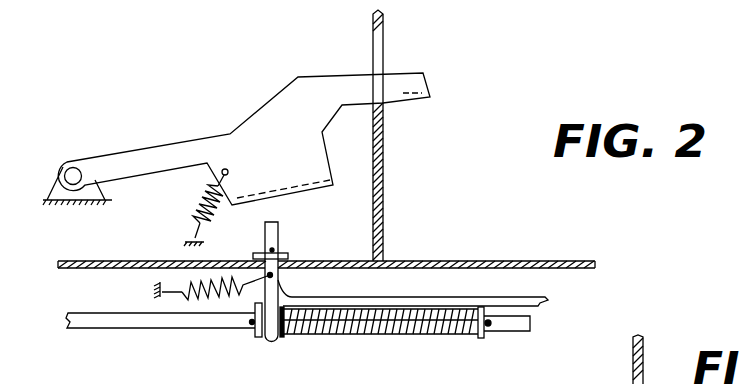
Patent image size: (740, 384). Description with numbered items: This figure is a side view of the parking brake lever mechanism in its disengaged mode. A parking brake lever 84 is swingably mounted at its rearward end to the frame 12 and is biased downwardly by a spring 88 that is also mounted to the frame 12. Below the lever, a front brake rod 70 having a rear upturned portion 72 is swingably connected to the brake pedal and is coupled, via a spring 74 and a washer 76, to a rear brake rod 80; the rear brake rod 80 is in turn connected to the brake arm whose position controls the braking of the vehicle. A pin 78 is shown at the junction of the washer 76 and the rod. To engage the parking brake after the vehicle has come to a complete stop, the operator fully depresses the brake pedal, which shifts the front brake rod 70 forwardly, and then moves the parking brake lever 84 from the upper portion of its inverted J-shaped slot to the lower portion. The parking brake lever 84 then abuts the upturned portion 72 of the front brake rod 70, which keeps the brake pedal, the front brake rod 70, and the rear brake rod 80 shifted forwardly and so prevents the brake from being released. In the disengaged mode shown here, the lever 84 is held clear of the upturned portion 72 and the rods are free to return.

The frame 12 is at (383, 185).
The front brake rod 70 is at (530, 322).
The rear upturned portion 72 is at (280, 237).
The spring 74 is at (375, 337).
The washer 76 is at (483, 340).
The pin 78 is at (488, 327).
The rear brake rod 80 is at (167, 332).
The parking brake lever 84 is at (430, 73).
The spring 88 is at (197, 195).